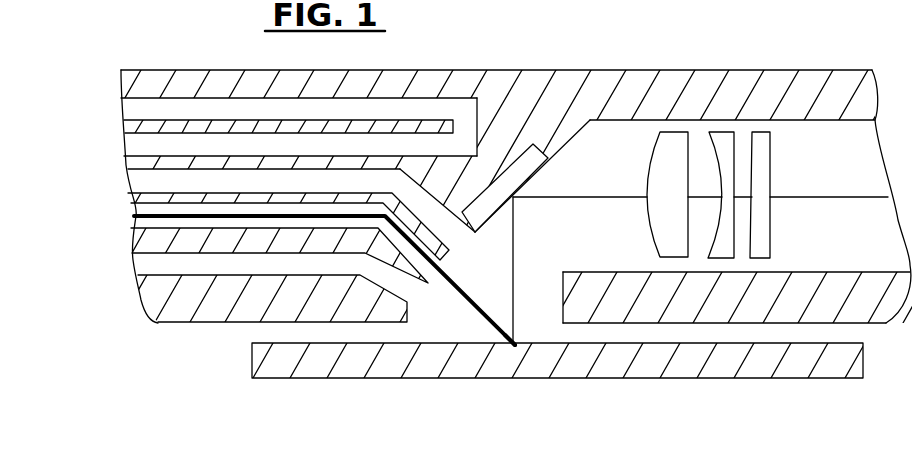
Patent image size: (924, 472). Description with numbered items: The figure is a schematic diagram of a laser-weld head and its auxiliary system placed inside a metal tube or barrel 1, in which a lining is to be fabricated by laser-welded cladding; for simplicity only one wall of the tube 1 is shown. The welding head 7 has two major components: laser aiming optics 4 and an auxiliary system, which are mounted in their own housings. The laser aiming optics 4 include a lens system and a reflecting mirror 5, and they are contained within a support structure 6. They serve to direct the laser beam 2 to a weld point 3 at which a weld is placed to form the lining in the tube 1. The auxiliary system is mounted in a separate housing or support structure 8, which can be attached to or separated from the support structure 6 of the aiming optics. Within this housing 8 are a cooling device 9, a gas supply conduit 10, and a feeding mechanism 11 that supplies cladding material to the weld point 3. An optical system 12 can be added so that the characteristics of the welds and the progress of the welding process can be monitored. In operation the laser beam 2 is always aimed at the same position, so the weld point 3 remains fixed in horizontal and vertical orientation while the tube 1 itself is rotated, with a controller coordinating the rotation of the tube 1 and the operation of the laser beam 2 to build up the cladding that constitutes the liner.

The tube 1 is at (654, 363).
The laser beam 2 is at (603, 200).
The weld point 3 is at (514, 355).
The laser aiming optics 4 is at (668, 160).
The reflecting mirror 5 is at (505, 177).
The support structure 6 is at (850, 98).
The welding head 7 is at (208, 310).
The auxiliary system housing 8 is at (226, 75).
The cooling device 9 is at (133, 143).
The gas supply conduit 10 is at (140, 180).
The feeding mechanism 11 is at (136, 217).
The optical system 12 is at (150, 264).